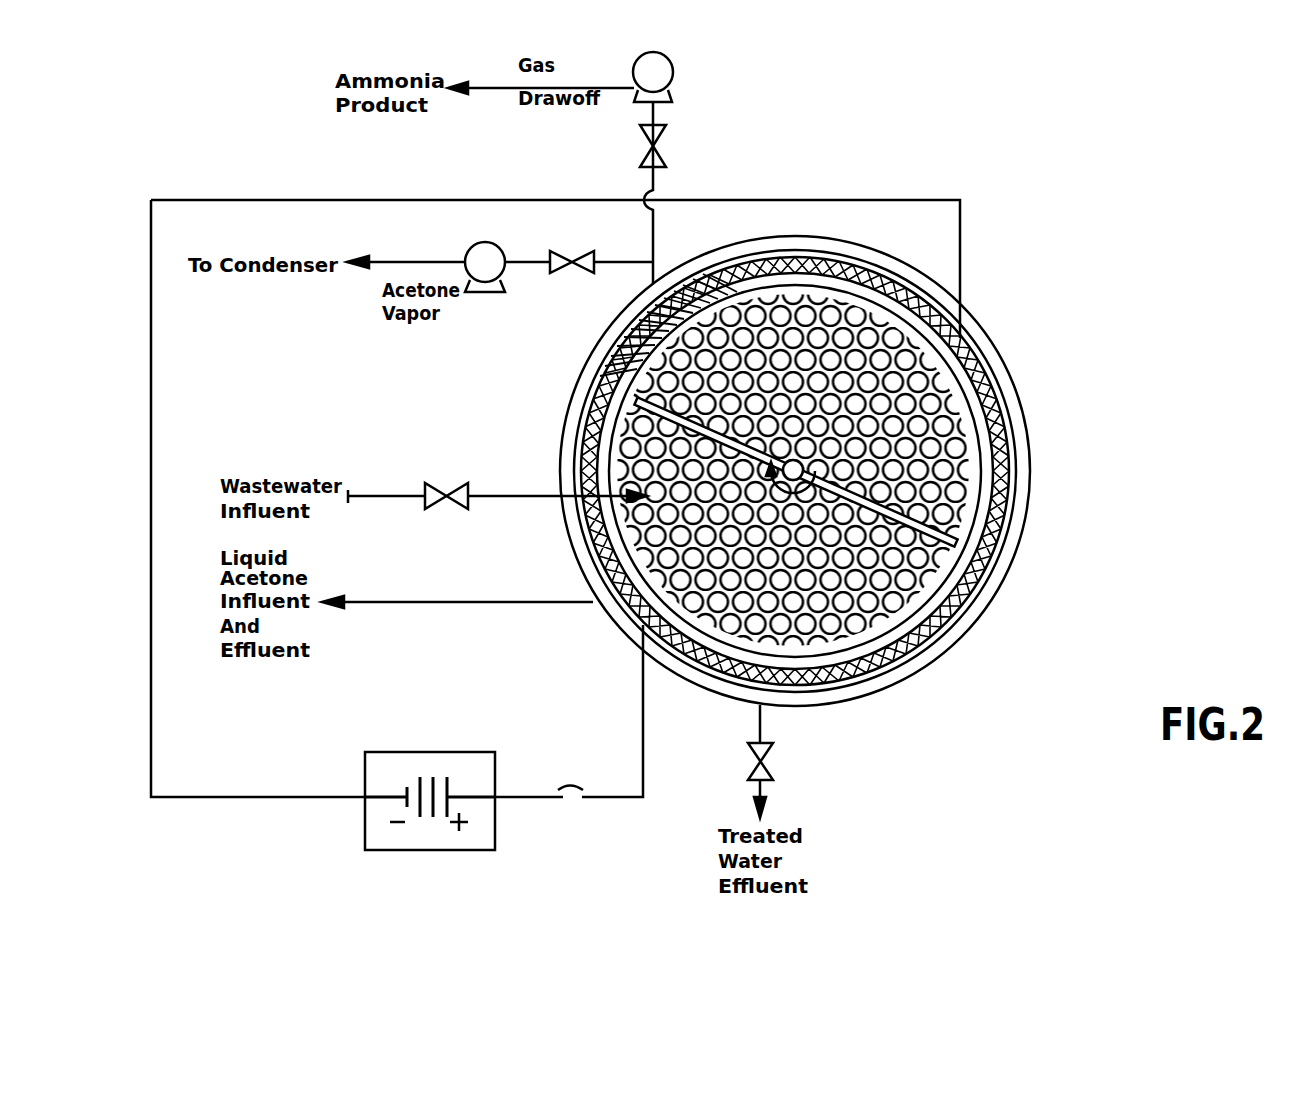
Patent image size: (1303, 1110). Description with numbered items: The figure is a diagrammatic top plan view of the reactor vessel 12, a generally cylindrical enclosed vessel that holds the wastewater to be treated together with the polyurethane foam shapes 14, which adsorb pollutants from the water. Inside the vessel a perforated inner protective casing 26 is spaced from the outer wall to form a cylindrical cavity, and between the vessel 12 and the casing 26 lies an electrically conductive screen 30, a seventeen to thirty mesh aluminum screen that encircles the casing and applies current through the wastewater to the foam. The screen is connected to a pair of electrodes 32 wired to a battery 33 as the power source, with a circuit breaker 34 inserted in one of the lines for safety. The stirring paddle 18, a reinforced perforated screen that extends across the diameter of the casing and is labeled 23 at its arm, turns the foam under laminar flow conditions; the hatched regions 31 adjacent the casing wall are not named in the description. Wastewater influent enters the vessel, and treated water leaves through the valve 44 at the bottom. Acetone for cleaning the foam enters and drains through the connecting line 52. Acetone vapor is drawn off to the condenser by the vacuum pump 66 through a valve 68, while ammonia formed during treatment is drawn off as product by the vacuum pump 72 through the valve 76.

The reactor vessel 12 is at (948, 650).
The polyurethane foam shapes 14 is at (1020, 405).
The stirring paddle 18 is at (620, 437).
The rotating paddle bar 23 is at (627, 398).
The perforated inner protective casing 26 is at (971, 487).
The electrically conductive screen 30 is at (971, 581).
The wiper blade 31 is at (722, 252).
The electrodes 32 is at (969, 339).
The battery 33 is at (442, 752).
The circuit breaker 34 is at (582, 786).
The valve 44 is at (772, 768).
The connecting line 52 is at (485, 598).
The vacuum pump 66 is at (470, 252).
The acetone vapor valve 68 is at (563, 252).
The vacuum pump 72 is at (656, 72).
The valve 76 is at (660, 150).